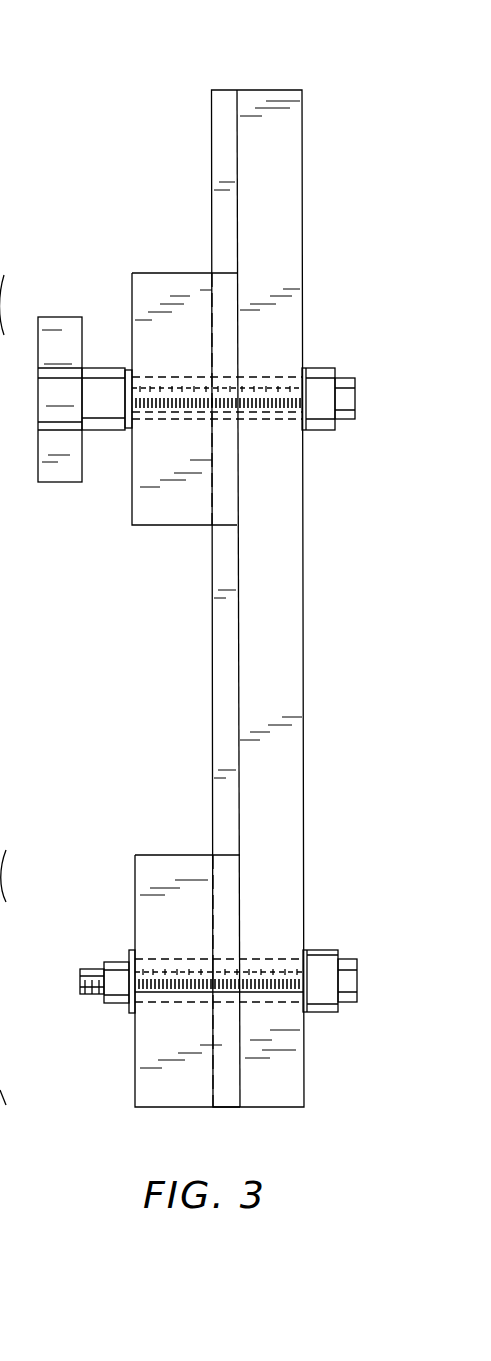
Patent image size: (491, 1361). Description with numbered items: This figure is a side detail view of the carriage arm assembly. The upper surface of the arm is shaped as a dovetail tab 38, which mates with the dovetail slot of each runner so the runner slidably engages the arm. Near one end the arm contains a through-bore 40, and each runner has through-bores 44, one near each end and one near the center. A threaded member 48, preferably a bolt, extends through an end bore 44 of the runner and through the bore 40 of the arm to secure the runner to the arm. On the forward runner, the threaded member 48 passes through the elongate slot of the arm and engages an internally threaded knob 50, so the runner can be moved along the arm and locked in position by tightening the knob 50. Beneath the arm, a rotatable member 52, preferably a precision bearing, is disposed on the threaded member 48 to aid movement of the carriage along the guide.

The dovetail tab 38 is at (222, 103).
The through-bore 40 is at (270, 1002).
The through-bore 44 is at (175, 378).
The threaded member 48 is at (340, 378).
The internally threaded knob 50 is at (68, 318).
The rotatable member 52 is at (320, 430).